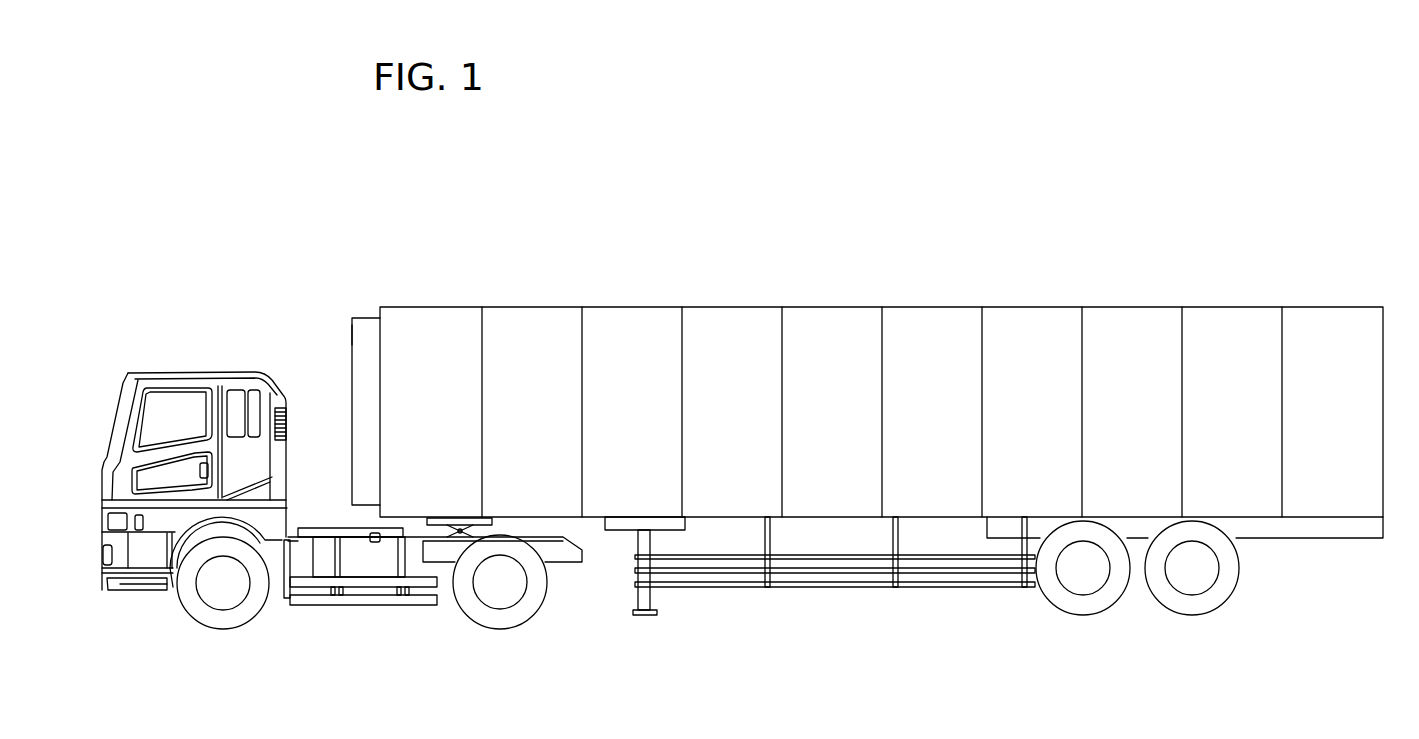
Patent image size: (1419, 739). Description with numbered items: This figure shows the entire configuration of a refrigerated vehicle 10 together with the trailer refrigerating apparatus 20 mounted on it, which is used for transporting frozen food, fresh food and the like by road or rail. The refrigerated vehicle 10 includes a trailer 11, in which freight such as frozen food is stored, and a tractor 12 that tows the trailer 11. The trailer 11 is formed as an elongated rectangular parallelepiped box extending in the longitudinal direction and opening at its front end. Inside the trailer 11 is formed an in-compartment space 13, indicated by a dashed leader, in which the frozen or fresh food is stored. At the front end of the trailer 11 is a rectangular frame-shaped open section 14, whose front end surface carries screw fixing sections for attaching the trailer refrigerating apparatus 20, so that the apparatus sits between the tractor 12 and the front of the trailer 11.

The refrigerated vehicle 10 is at (243, 220).
The trailer 11 is at (822, 307).
The tractor 12 is at (190, 372).
The in-compartment space 13 is at (724, 346).
The open section 14 is at (380, 345).
The trailer refrigerating apparatus 20 is at (350, 333).